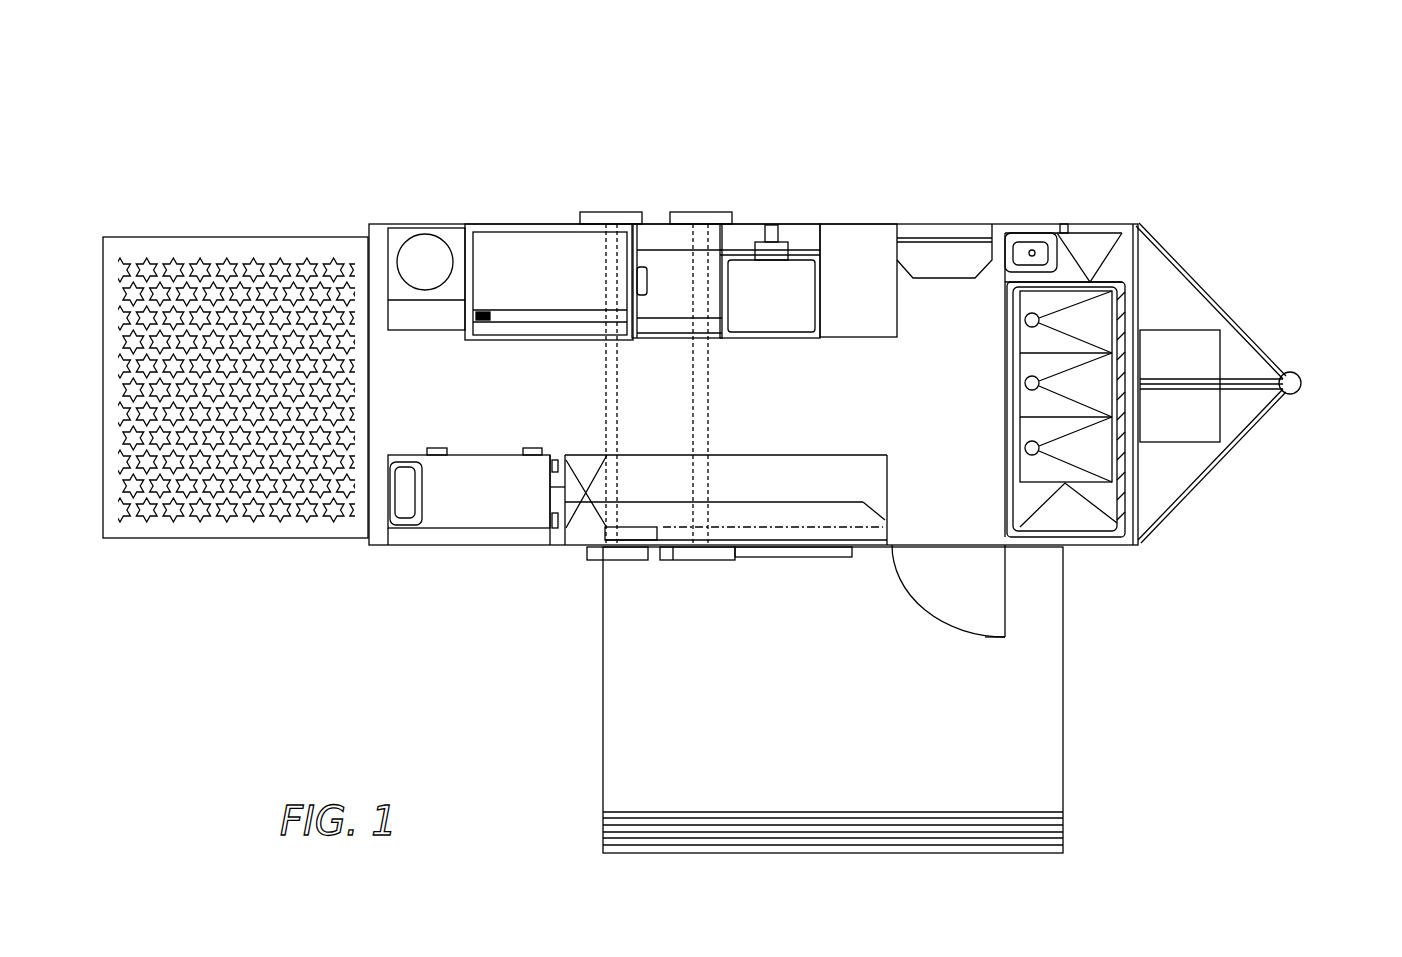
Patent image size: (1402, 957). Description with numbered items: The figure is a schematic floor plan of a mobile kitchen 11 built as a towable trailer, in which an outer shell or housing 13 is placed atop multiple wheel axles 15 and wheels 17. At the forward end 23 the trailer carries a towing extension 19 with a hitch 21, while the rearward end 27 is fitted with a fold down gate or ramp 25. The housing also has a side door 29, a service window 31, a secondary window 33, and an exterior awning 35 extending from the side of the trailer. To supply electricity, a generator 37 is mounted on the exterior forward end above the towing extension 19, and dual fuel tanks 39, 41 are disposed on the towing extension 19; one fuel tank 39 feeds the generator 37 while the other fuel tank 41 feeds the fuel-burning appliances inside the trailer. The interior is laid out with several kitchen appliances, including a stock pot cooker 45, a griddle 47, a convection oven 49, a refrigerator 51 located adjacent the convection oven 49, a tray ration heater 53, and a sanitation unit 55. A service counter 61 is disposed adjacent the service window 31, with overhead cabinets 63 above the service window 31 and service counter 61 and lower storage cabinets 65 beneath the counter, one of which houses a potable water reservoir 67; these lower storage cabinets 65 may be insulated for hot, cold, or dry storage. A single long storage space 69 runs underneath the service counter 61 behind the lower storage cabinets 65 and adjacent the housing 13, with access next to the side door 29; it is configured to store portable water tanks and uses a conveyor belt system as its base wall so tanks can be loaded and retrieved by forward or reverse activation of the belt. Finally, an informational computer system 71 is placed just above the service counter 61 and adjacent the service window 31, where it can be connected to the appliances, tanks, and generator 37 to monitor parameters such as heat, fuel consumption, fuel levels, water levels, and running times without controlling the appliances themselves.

The mobile kitchen 11 is at (347, 120).
The outer shell or housing 13 is at (405, 548).
The wheel axles 15 is at (605, 388).
The wheels 17 is at (698, 212).
The towing extension 19 is at (1260, 357).
The hitch 21 is at (1303, 387).
The forward end 23 is at (1140, 225).
The fold down gate or ramp 25 is at (225, 243).
The rearward end 27 is at (343, 232).
The side door 29 is at (1007, 605).
The service window 31 is at (798, 562).
The secondary window 33 is at (975, 227).
The exterior awning 35 is at (1063, 722).
The generator 37 is at (1198, 330).
The fuel tank 39 is at (1237, 345).
The fuel tank 41 is at (1252, 402).
The stock pot cooker 45 is at (440, 227).
The griddle 47 is at (510, 240).
The convection oven 49 is at (737, 233).
The refrigerator 51 is at (842, 232).
The tray ration heater 53 is at (523, 540).
The sanitation unit 55 is at (1142, 530).
The service counter 61 is at (868, 457).
The overhead cabinets 63 is at (863, 502).
The lower storage cabinets 65 is at (815, 455).
The potable water reservoir 67 is at (580, 467).
The long storage space 69 is at (860, 523).
The informational computer system 71 is at (578, 540).